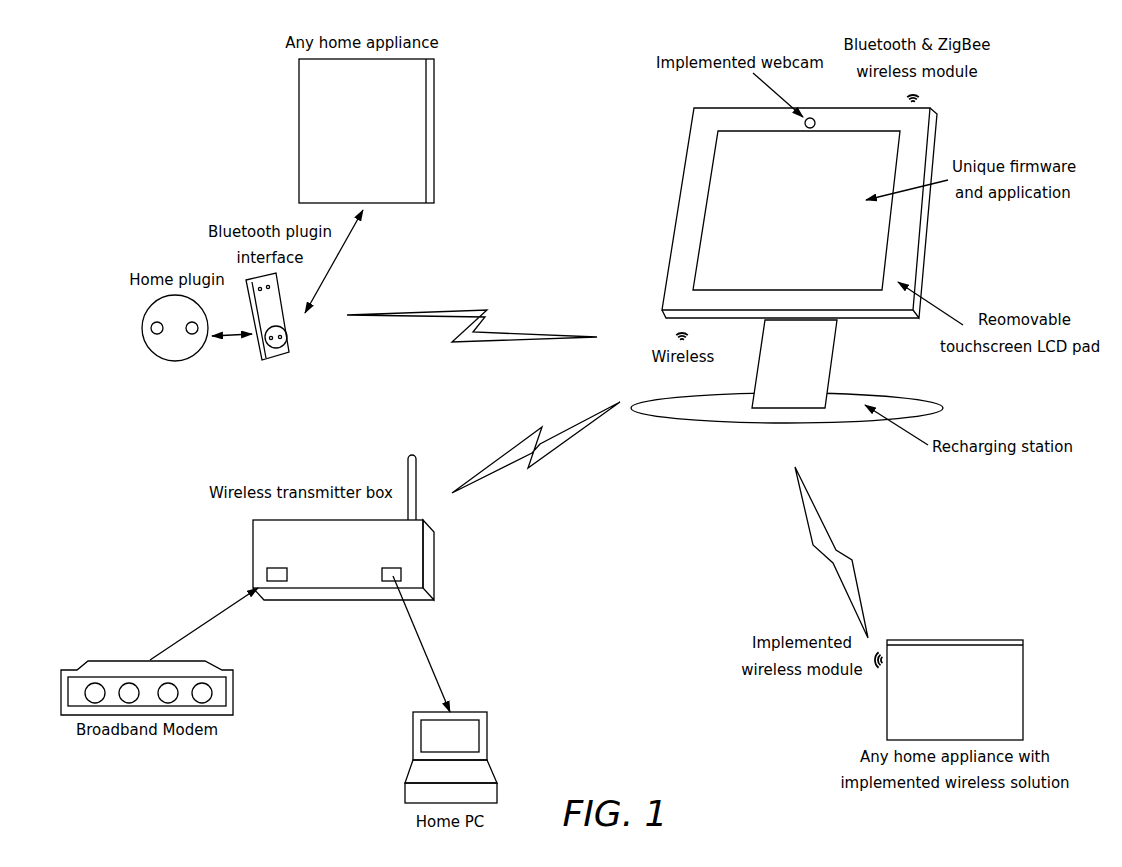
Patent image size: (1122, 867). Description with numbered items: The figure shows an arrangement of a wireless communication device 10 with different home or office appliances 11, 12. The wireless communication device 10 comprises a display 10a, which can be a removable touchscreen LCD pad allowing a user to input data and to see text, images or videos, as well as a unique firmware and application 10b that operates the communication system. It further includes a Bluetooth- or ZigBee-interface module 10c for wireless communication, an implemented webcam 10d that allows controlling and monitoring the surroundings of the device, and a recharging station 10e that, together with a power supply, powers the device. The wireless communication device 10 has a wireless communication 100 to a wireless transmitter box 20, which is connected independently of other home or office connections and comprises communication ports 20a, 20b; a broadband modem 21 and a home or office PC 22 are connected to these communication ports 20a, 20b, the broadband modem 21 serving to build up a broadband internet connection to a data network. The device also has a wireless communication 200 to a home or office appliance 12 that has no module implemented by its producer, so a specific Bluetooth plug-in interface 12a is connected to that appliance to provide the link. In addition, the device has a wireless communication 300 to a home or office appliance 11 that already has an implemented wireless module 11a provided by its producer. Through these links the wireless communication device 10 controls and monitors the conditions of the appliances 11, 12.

The wireless communication device 10 is at (819, 246).
The display 10a is at (1020, 365).
The unique firmware and application 10b is at (1012, 213).
The Bluetooth- or ZigBee-interface module 10c is at (915, 30).
The implemented webcam 10d is at (740, 43).
The recharging station 10e is at (1007, 460).
The home or office appliance 11 is at (1010, 632).
The implemented wireless module 11a is at (802, 683).
The home or office appliance 12 is at (299, 90).
The Bluetooth plug-in interface 12a is at (273, 360).
The wireless transmitter box 20 is at (344, 527).
The communication port 20a is at (267, 572).
The communication port 20b is at (398, 567).
The broadband modem 21 is at (68, 668).
The home or office PC 22 is at (423, 710).
The wireless communication 100 is at (537, 428).
The wireless communication 200 is at (475, 307).
The wireless communication 300 is at (847, 550).